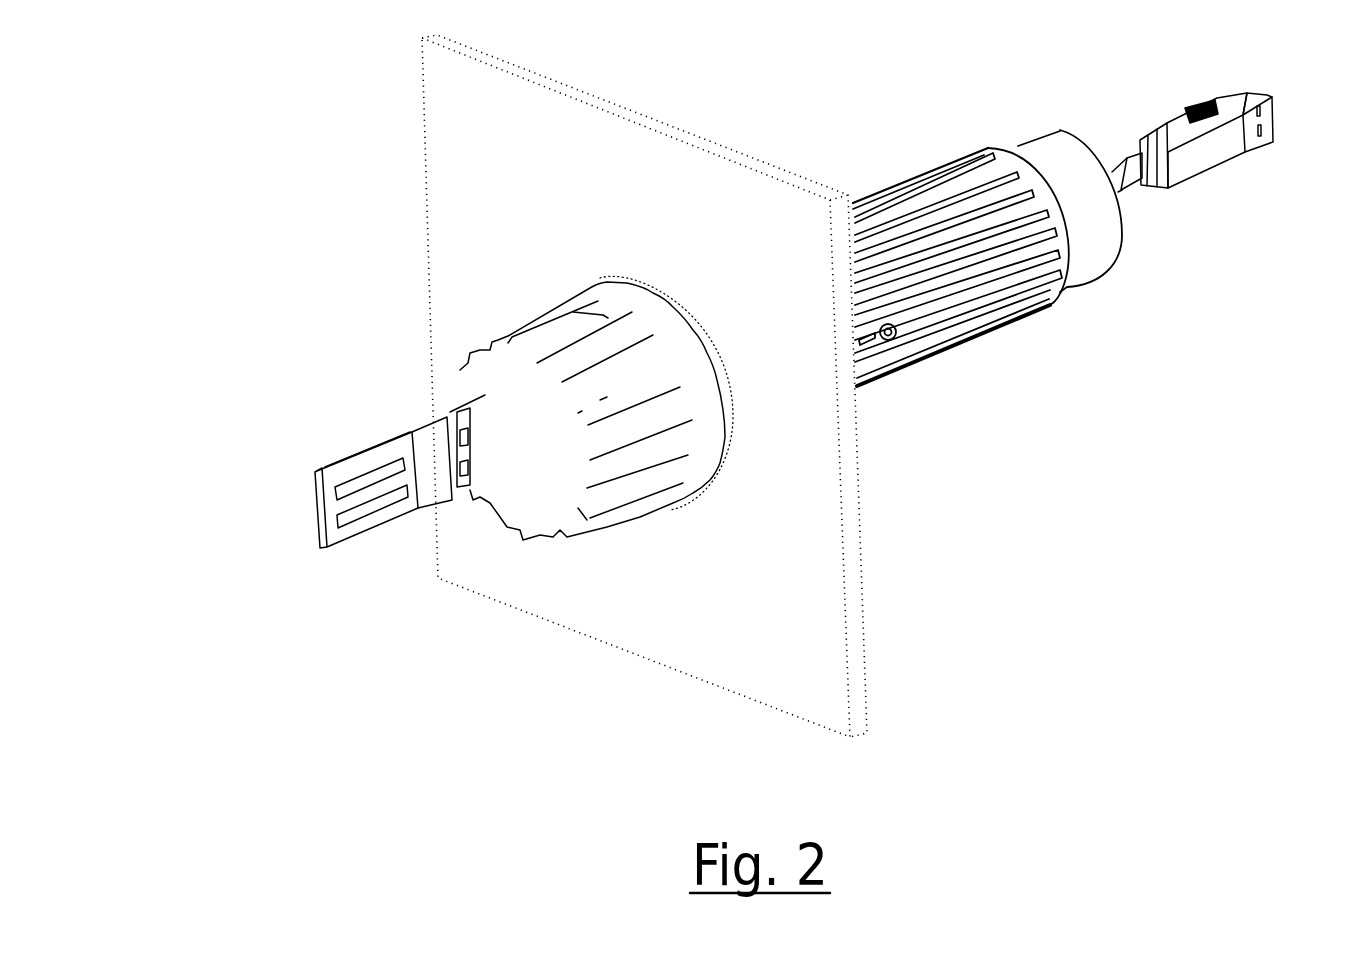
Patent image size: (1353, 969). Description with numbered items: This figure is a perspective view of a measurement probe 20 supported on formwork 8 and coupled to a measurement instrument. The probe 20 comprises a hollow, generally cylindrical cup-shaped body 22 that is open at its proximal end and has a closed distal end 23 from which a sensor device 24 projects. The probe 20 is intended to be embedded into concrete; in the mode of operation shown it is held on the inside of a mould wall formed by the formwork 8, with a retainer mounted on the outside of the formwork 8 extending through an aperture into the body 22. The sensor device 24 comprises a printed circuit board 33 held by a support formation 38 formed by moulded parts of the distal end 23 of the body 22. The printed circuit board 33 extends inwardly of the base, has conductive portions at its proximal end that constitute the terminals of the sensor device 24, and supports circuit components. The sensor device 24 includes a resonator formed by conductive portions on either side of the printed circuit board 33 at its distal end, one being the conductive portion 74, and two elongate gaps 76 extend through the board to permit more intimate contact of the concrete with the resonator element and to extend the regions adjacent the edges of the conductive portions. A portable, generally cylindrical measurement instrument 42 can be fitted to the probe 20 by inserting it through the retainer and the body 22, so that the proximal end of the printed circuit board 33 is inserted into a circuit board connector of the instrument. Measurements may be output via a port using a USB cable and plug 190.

The formwork 8 is at (808, 505).
The measurement probe 20 is at (473, 486).
The cup-shaped body 22 is at (567, 350).
The distal end 23 is at (523, 442).
The sensor device 24 is at (402, 435).
The printed circuit board 33 is at (437, 482).
The support formation 38 is at (466, 401).
The portable measurement instrument 42 is at (930, 203).
The conductive portion 74 is at (315, 511).
The elongate gaps 76 is at (357, 508).
The USB cable and plug 190 is at (1165, 117).